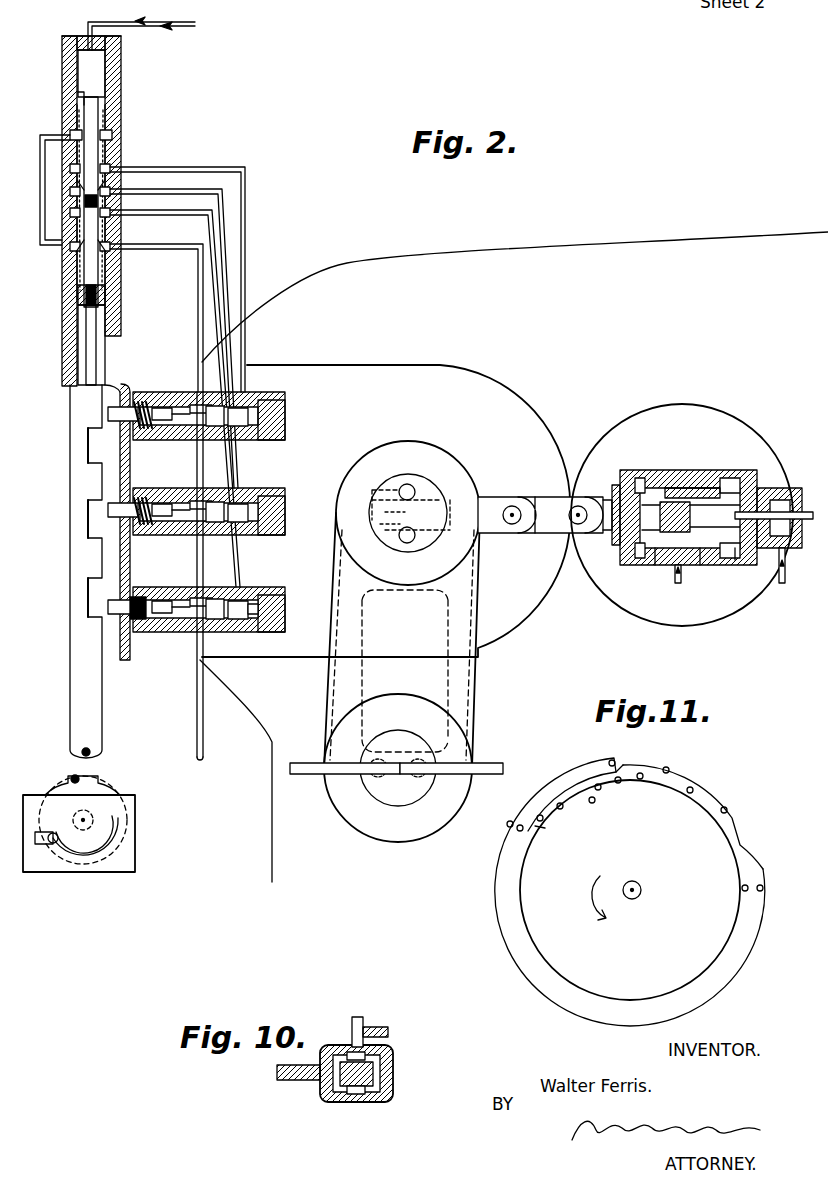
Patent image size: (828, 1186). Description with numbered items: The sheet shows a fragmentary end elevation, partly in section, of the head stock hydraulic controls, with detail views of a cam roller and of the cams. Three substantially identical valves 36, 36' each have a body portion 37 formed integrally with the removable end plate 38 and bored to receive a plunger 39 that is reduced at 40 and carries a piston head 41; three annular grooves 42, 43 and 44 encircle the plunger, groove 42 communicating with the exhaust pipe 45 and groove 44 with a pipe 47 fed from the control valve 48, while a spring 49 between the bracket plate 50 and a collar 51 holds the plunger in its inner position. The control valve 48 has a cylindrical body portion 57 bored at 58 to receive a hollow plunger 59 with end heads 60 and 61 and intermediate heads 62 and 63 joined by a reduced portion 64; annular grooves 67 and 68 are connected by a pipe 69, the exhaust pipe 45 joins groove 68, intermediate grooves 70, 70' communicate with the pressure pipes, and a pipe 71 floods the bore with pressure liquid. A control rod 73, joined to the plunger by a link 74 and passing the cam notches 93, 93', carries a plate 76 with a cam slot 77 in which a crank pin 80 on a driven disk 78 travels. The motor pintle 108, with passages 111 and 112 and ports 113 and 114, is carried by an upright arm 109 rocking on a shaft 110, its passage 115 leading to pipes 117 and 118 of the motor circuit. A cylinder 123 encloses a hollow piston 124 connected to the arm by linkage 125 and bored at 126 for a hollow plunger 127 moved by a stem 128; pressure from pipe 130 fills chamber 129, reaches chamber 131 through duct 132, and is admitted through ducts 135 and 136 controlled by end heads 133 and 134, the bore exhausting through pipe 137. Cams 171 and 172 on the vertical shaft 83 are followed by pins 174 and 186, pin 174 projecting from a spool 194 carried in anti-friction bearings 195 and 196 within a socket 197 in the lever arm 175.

In FIG. 2, the control valve 48 is at (78, 37).
In FIG. 2, the pipe 71 is at (152, 26).
In FIG. 2, the body portion 57 is at (112, 66).
In FIG. 2, the bore 58 is at (90, 72).
In FIG. 2, the hollow plunger 59 is at (82, 92).
In FIG. 2, the end head 60 is at (100, 102).
In FIG. 2, the reduced portion 64 is at (116, 146).
In FIG. 2, the annular groove 67 is at (70, 136).
In FIG. 2, the intermediate groove 70 is at (157, 267).
In FIG. 2, the intermediate groove 70' is at (154, 330).
In FIG. 2, the intermediate head 62 is at (122, 206).
In FIG. 2, the pipe 47 is at (245, 265).
In FIG. 2, the pipe 69 is at (45, 247).
In FIG. 2, the intermediate head 63 is at (116, 248).
In FIG. 2, the annular groove 68 is at (116, 274).
In FIG. 2, the end head 61 is at (112, 300).
In FIG. 2, the link 74 is at (98, 340).
In FIG. 2, the control rod 73 is at (80, 560).
In FIG. 2, the cam notch 93 is at (66, 444).
In FIG. 2, the cam notch 93' is at (66, 516).
In FIG. 2, the valve 36 is at (220, 401).
In FIG. 2, the valve 36' is at (222, 495).
In FIG. 2, the body portion 37 is at (277, 418).
In FIG. 2, the spring 49 is at (150, 396).
In FIG. 2, the plunger 39 is at (148, 430).
In FIG. 2, the collar 51 is at (152, 398).
In FIG. 2, the bracket plate 50 is at (138, 478).
In FIG. 2, the reduced portion 40 is at (192, 428).
In FIG. 2, the piston head 41 is at (216, 535).
In FIG. 2, the annular groove 42 is at (222, 446).
In FIG. 2, the annular groove 43 is at (214, 440).
In FIG. 2, the annular groove 44 is at (255, 628).
In FIG. 2, the exhaust pipe 45 is at (203, 738).
In FIG. 2, the removable end plate 38 is at (378, 378).
In FIG. 2, the pintle 108 is at (425, 492).
In FIG. 2, the passage 111 is at (408, 484).
In FIG. 2, the passage 112 is at (408, 543).
In FIG. 2, the port 113 is at (392, 490).
In FIG. 2, the port 114 is at (396, 538).
In FIG. 2, the upright arm 109 is at (455, 606).
In FIG. 2, the passage 115 is at (350, 628).
In FIG. 2, the shaft 110 is at (378, 786).
In FIG. 2, the pipe 117 is at (306, 764).
In FIG. 2, the pipe 118 is at (492, 766).
In FIG. 2, the linkage 125 is at (550, 500).
In FIG. 2, the cylinder 123 is at (624, 474).
In FIG. 2, the stem 128 is at (784, 490).
In FIG. 2, the hollow piston 124 is at (652, 482).
In FIG. 2, the duct 136 is at (672, 480).
In FIG. 2, the hollow plunger 127 is at (650, 520).
In FIG. 2, the end head 133 is at (668, 516).
In FIG. 2, the end head 134 is at (705, 512).
In FIG. 2, the annular chamber 131 is at (705, 527).
In FIG. 2, the bore 126 is at (618, 538).
In FIG. 2, the duct 132 is at (660, 566).
In FIG. 2, the pipe 130 is at (676, 584).
In FIG. 2, the annular chamber 129 is at (712, 568).
In FIG. 2, the duct 135 is at (742, 562).
In FIG. 2, the pipe 137 is at (782, 584).
In FIG. 2, the plate 76 is at (130, 828).
In FIG. 2, the disk 78 is at (112, 790).
In FIG. 2, the cam slot 77 is at (92, 858).
In FIG. 2, the crank pin 80 is at (58, 826).
In FIG. 11, the cam 172 is at (504, 938).
In FIG. 11, the cam 171 is at (560, 898).
In FIG. 10, the cam 171 is at (378, 1026).
In FIG. 11, the vertical shaft 83 is at (640, 892).
In FIG. 11, the pin 186 is at (512, 822).
In FIG. 11, the pin 174 is at (540, 832).
In FIG. 10, the pin 174 is at (356, 1018).
In FIG. 10, the anti-friction bearing 196 is at (393, 1070).
In FIG. 10, the anti-friction bearing 195 is at (395, 1088).
In FIG. 10, the socket 197 is at (340, 1050).
In FIG. 10, the spool 194 is at (346, 1102).
In FIG. 10, the arm 175 is at (292, 1082).